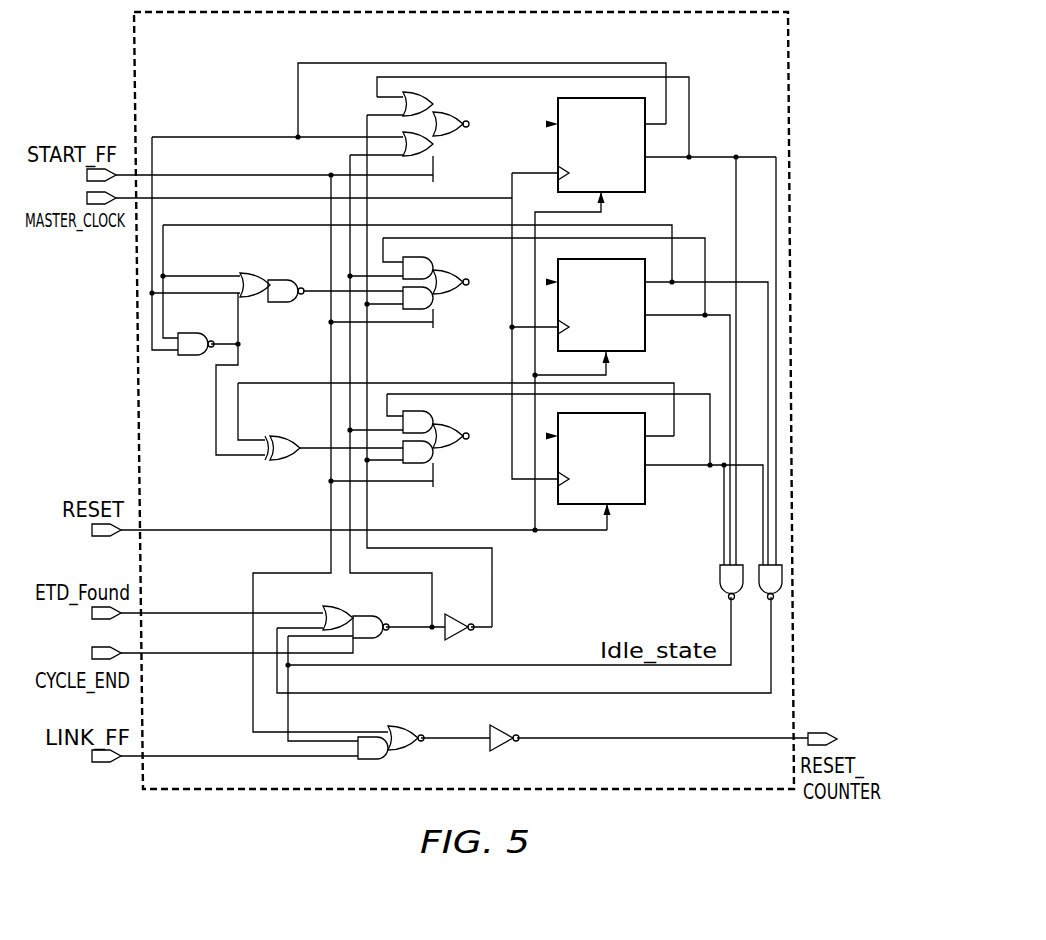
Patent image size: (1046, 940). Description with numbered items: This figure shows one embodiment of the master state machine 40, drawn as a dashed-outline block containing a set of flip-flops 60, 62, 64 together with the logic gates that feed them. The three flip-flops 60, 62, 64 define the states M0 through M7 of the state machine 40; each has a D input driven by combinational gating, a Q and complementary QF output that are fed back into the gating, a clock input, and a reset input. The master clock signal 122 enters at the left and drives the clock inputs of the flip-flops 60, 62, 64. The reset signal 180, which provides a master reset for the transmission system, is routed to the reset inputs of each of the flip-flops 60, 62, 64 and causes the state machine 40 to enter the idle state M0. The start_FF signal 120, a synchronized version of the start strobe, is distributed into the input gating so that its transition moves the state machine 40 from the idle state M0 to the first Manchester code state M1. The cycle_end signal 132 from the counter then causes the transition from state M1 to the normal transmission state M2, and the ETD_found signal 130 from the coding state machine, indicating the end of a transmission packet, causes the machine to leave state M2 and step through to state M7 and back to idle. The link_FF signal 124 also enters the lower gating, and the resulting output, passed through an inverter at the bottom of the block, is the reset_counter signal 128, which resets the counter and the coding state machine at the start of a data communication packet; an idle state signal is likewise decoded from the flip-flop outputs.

The master state machine 40 is at (788, 107).
The flip-flop 60 is at (601, 145).
The flip-flop 62 is at (601, 305).
The flip-flop 64 is at (601, 458).
The start_FF signal 120 is at (87, 176).
The master clock signal 122 is at (87, 199).
The link_FF signal 124 is at (162, 756).
The reset_counter signal 128 is at (813, 733).
The ETD_found signal 130 is at (162, 613).
The cycle_end signal 132 is at (162, 653).
The reset signal 180 is at (248, 528).